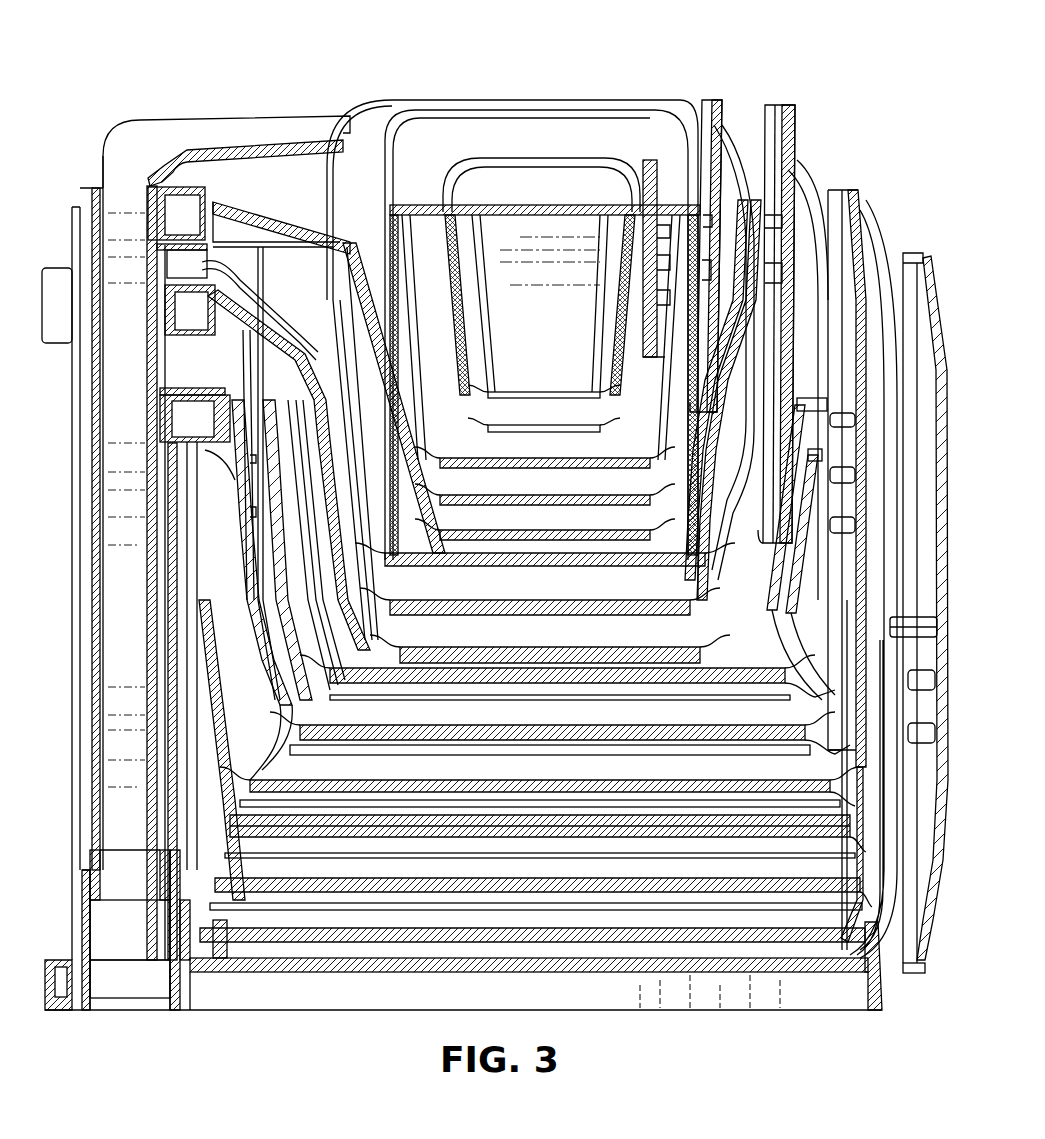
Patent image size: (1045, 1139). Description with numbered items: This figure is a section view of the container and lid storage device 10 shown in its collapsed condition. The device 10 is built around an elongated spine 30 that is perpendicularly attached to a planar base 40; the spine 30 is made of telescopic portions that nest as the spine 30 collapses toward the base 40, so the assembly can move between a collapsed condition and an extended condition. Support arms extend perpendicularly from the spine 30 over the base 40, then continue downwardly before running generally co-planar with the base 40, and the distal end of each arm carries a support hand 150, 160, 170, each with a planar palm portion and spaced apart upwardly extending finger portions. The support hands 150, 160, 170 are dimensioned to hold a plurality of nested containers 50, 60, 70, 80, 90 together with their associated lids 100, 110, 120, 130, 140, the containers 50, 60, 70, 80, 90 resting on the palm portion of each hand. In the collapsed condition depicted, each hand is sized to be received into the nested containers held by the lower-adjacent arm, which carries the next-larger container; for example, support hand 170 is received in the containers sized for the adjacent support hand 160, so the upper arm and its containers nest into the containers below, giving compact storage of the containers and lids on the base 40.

The container and lid storage device 10 is at (571, 494).
The elongated spine 30 is at (106, 134).
The planar base 40 is at (205, 1012).
The container 50 is at (540, 210).
The container 60 is at (420, 205).
The container 70 is at (347, 138).
The container 80 is at (306, 322).
The container 90 is at (213, 590).
The lid 100 is at (648, 160).
The lid 110 is at (707, 100).
The lid 120 is at (773, 105).
The lid 130 is at (835, 190).
The lid 140 is at (913, 253).
The support hand 150 is at (213, 396).
The support hand 160 is at (215, 290).
The support hand 170 is at (252, 207).